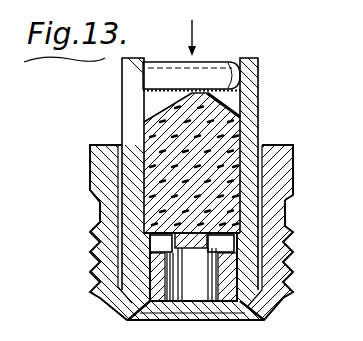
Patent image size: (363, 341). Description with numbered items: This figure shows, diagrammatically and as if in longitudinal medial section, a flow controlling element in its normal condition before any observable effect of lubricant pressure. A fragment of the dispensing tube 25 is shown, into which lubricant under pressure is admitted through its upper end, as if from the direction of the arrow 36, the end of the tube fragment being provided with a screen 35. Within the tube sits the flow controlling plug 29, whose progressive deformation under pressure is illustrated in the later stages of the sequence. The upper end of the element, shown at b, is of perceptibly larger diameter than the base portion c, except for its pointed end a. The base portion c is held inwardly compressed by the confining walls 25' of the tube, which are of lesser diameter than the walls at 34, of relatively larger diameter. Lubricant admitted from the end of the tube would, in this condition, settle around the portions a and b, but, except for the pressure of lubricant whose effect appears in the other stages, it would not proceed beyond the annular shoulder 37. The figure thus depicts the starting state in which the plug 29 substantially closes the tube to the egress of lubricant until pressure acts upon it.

The dispensing tube 25 is at (216, 189).
The confining walls 25' is at (168, 232).
The flow controlling plug 29 is at (200, 185).
The walls of relatively larger diameter 34 is at (143, 124).
The screen 35 is at (236, 92).
The arrow 36 is at (199, 36).
The annular shoulder 37 is at (148, 150).
The pointed end a is at (147, 100).
The upper end of the element b is at (223, 133).
The base portion c is at (200, 185).